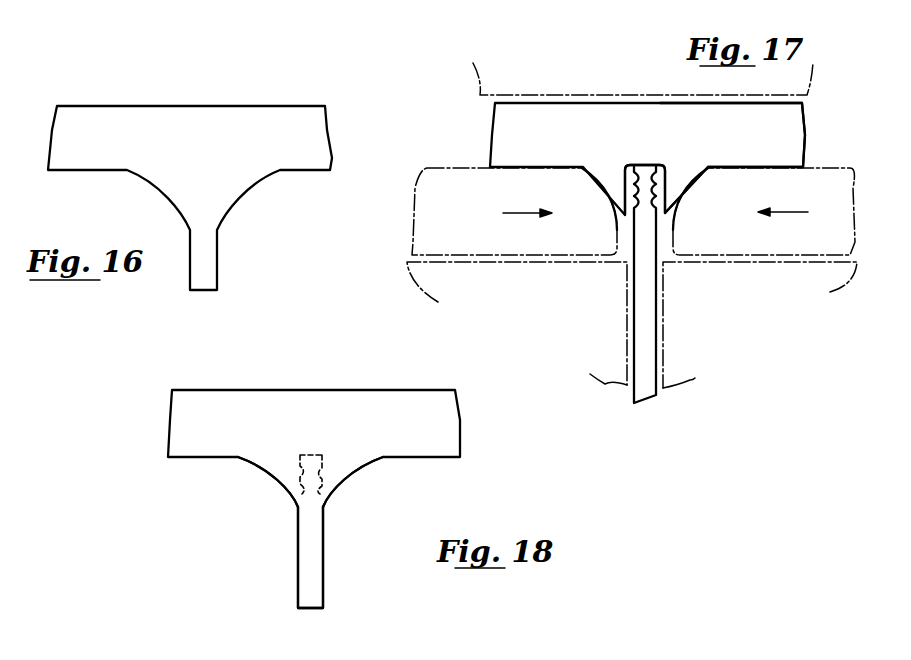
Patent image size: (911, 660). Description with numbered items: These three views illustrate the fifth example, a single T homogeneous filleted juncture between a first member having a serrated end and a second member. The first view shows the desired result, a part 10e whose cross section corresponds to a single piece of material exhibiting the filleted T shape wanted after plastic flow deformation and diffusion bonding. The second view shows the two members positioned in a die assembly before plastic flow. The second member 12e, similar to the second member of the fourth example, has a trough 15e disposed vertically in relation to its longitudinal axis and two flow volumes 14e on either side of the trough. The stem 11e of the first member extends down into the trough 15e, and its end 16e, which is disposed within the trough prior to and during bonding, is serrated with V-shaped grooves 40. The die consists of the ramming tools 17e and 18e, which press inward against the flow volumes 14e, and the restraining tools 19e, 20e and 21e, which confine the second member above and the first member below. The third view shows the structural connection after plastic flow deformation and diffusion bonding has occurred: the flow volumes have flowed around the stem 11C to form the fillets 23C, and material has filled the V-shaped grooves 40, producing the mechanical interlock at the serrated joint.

In FIG. 16, the T-shaped blank 10e is at (248, 113).
In FIG. 17, the stem of T-blank 11e is at (649, 391).
In FIG. 18, the stem 11C is at (313, 583).
In FIG. 17, the second member 12e is at (797, 127).
In FIG. 18, the second member 12e is at (303, 400).
In FIG. 17, the flow volumes 14e is at (613, 182).
In FIG. 17, the trough 15e is at (665, 180).
In FIG. 17, the end of the first member 16e is at (653, 167).
In FIG. 17, the ramming tool 17e is at (835, 188).
In FIG. 17, the ramming tool 18e is at (437, 187).
In FIG. 17, the restraining tool 19e is at (570, 122).
In FIG. 17, the restraining tool 20e is at (588, 368).
In FIG. 17, the restraining tool 21e is at (695, 357).
In FIG. 18, the fillet 23C is at (272, 475).
In FIG. 17, the V-shaped grooves 40 is at (645, 167).
In FIG. 18, the V-shaped grooves 40 is at (330, 497).